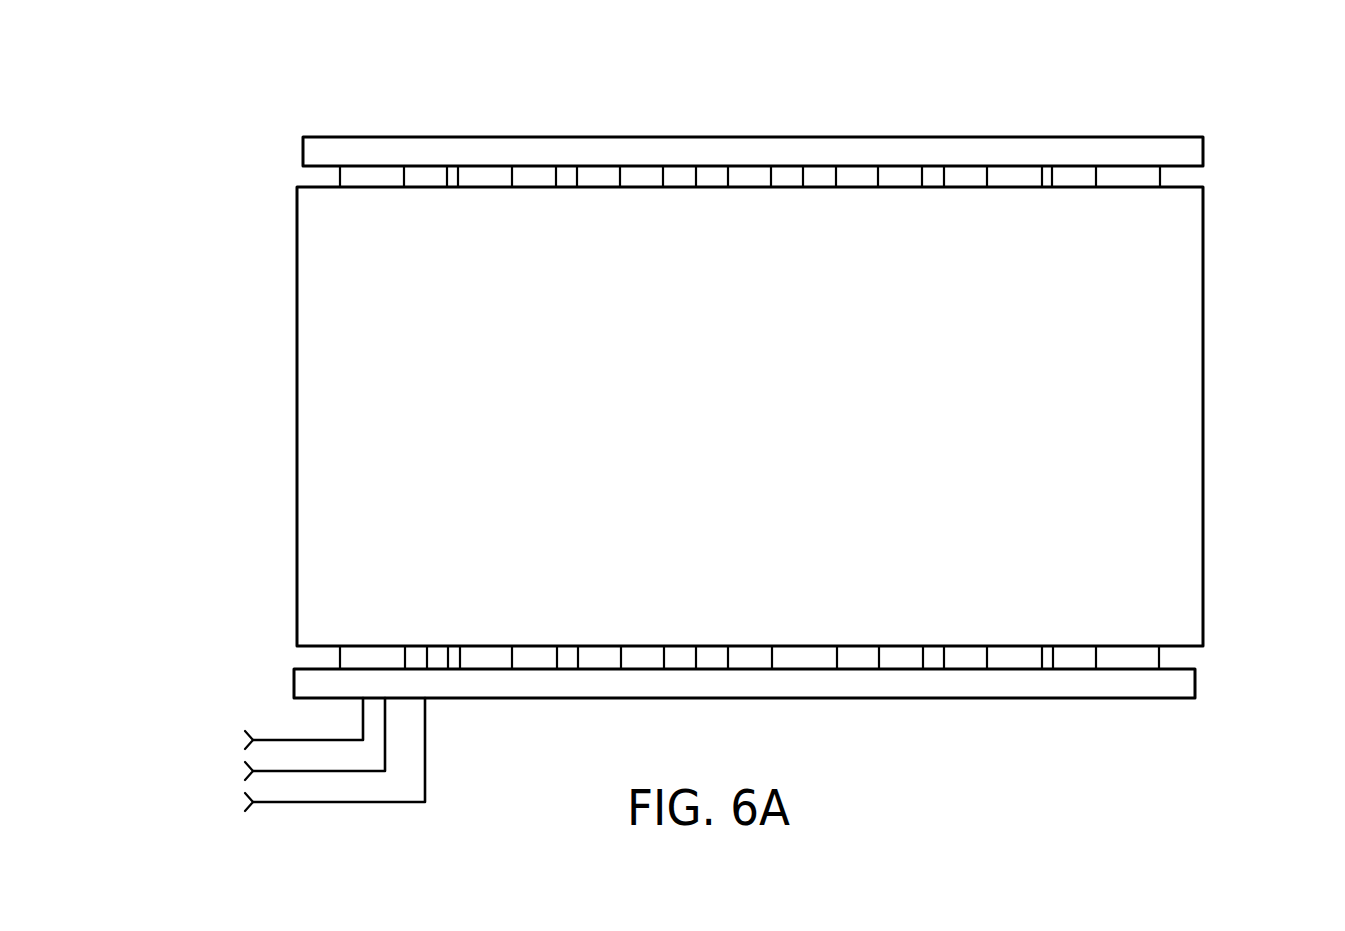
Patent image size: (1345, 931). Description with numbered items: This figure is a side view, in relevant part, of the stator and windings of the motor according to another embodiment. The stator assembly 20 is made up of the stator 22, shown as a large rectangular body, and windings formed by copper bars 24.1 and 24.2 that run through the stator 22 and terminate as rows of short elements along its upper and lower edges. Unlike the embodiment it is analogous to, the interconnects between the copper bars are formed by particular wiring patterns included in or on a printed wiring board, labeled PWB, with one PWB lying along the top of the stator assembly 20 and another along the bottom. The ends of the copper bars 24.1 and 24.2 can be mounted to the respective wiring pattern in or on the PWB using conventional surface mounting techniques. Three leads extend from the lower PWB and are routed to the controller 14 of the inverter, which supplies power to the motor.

The stator assembly 20 is at (1068, 108).
The stator 22 is at (1141, 377).
The copper bar 24.1 is at (932, 167).
The copper bar 24.2 is at (905, 165).
The controller 14 is at (274, 754).
The printed wiring board PWB is at (1185, 148).